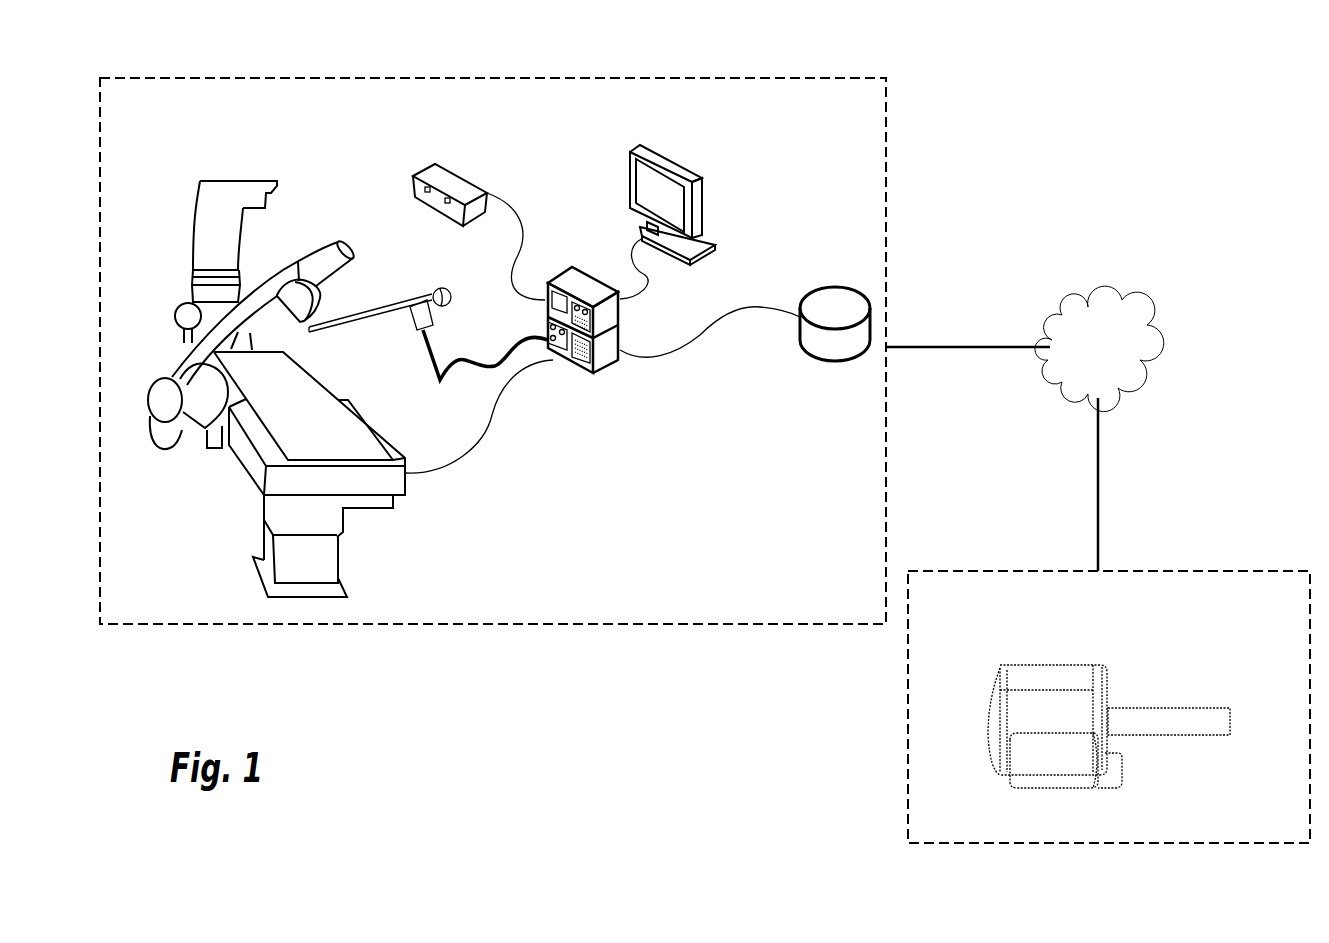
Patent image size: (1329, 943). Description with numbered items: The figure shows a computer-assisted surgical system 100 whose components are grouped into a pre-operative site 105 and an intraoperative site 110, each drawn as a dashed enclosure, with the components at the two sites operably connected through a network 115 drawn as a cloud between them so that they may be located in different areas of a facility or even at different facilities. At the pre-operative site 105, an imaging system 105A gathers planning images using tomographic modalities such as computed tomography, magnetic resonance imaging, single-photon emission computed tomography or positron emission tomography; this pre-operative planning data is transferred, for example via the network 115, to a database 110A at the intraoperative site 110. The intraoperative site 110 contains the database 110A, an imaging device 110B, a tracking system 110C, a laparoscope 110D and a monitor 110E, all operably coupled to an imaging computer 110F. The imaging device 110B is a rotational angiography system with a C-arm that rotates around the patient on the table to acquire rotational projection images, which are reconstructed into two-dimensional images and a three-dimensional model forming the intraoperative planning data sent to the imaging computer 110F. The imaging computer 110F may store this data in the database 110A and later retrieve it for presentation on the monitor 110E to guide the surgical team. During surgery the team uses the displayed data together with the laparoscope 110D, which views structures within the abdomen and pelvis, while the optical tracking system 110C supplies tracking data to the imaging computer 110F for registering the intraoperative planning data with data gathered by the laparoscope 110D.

The computer-assisted surgical system 100 is at (1018, 60).
The pre-operative site 105 is at (1183, 569).
The imaging system 105A is at (1210, 703).
The intraoperative site 110 is at (367, 76).
The database 110A is at (827, 285).
The imaging device 110B is at (192, 232).
The tracking system 110C is at (438, 163).
The laparoscope 110D is at (433, 286).
The monitor 110E is at (628, 147).
The imaging computer 110F is at (618, 367).
The network 115 is at (1095, 300).